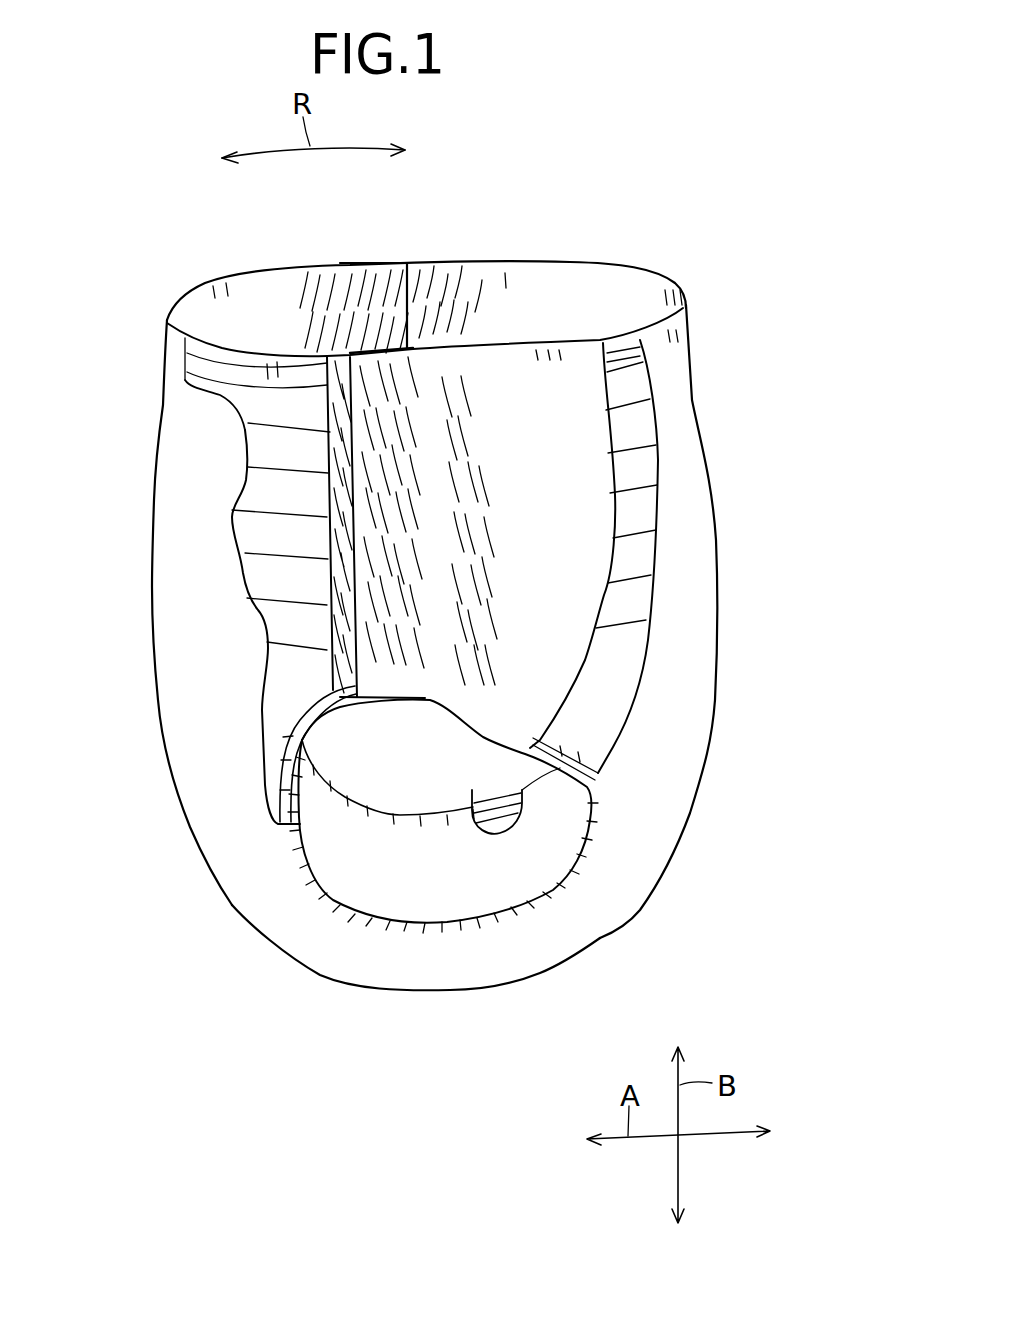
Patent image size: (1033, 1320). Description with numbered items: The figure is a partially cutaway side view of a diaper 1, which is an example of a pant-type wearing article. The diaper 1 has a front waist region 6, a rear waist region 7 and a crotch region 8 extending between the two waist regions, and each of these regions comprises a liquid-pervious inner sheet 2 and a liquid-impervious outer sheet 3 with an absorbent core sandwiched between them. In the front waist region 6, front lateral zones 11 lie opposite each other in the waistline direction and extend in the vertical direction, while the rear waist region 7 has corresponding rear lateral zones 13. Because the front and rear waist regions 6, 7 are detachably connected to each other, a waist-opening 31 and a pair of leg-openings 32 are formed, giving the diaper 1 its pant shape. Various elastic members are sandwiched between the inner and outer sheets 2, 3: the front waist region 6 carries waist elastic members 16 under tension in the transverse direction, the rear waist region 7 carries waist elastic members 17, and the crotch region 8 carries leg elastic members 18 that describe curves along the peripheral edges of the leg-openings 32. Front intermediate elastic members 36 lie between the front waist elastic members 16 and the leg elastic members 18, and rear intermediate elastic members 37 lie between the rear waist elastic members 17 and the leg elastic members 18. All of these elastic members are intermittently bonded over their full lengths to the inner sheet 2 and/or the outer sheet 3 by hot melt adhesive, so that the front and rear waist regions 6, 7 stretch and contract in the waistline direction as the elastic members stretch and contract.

The diaper 1 is at (693, 207).
The inner sheet 2 is at (267, 442).
The outer sheet 3 is at (178, 535).
The front waist region 6 is at (175, 620).
The rear waist region 7 is at (698, 588).
The crotch region 8 is at (423, 972).
The front lateral zones 11 is at (389, 290).
The rear lateral zones 13 is at (437, 280).
The waist elastic members 16 is at (201, 370).
The waist elastic members 17 is at (630, 350).
The leg elastic members 18 is at (282, 789).
The waist-opening 31 is at (543, 297).
The leg-openings 32 is at (380, 773).
The front intermediate elastic members 36 is at (240, 518).
The rear intermediate elastic members 37 is at (633, 490).